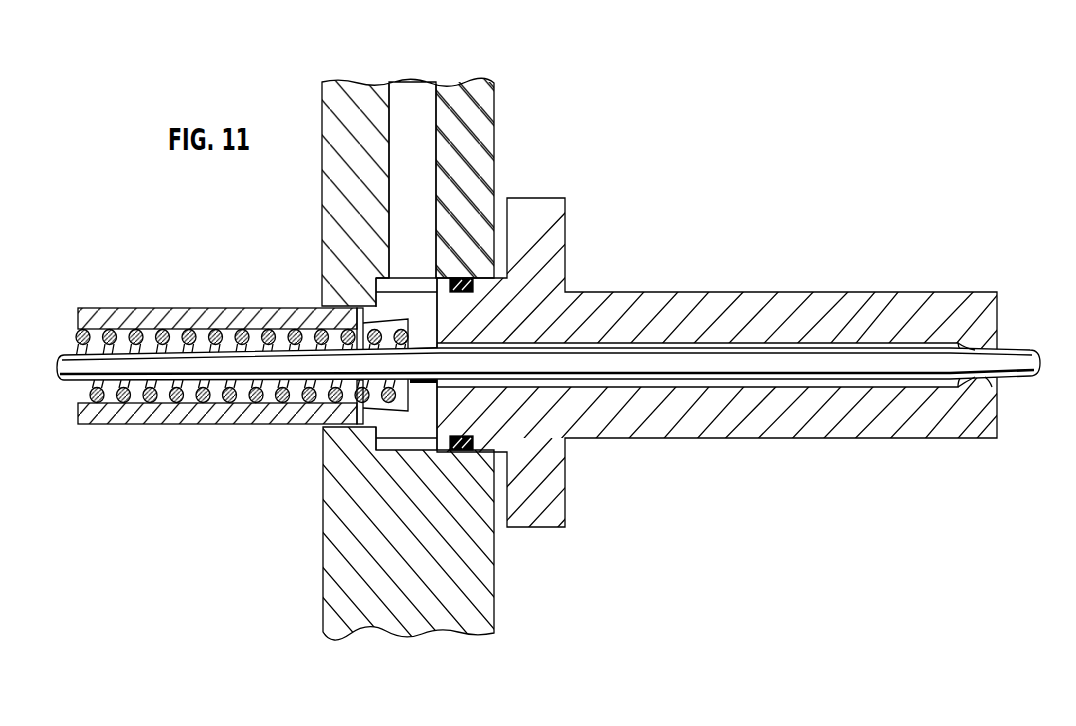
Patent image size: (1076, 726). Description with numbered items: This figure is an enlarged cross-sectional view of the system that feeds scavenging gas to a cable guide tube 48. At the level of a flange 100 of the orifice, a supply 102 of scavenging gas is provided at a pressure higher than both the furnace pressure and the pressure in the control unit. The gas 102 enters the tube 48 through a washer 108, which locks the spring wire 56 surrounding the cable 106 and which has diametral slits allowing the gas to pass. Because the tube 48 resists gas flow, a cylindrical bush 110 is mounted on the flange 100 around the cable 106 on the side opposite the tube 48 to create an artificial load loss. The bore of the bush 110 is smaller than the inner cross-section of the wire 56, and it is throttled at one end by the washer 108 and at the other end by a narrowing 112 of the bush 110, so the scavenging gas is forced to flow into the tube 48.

The cable guide tube 48 is at (157, 307).
The spring wire 56 is at (245, 332).
The flange 100 is at (333, 563).
The supply of scavenging gas 102 is at (422, 127).
The cable 106 is at (1023, 352).
The washer 108 is at (410, 303).
The cylindrical bush 110 is at (724, 426).
The narrowing 112 is at (988, 385).